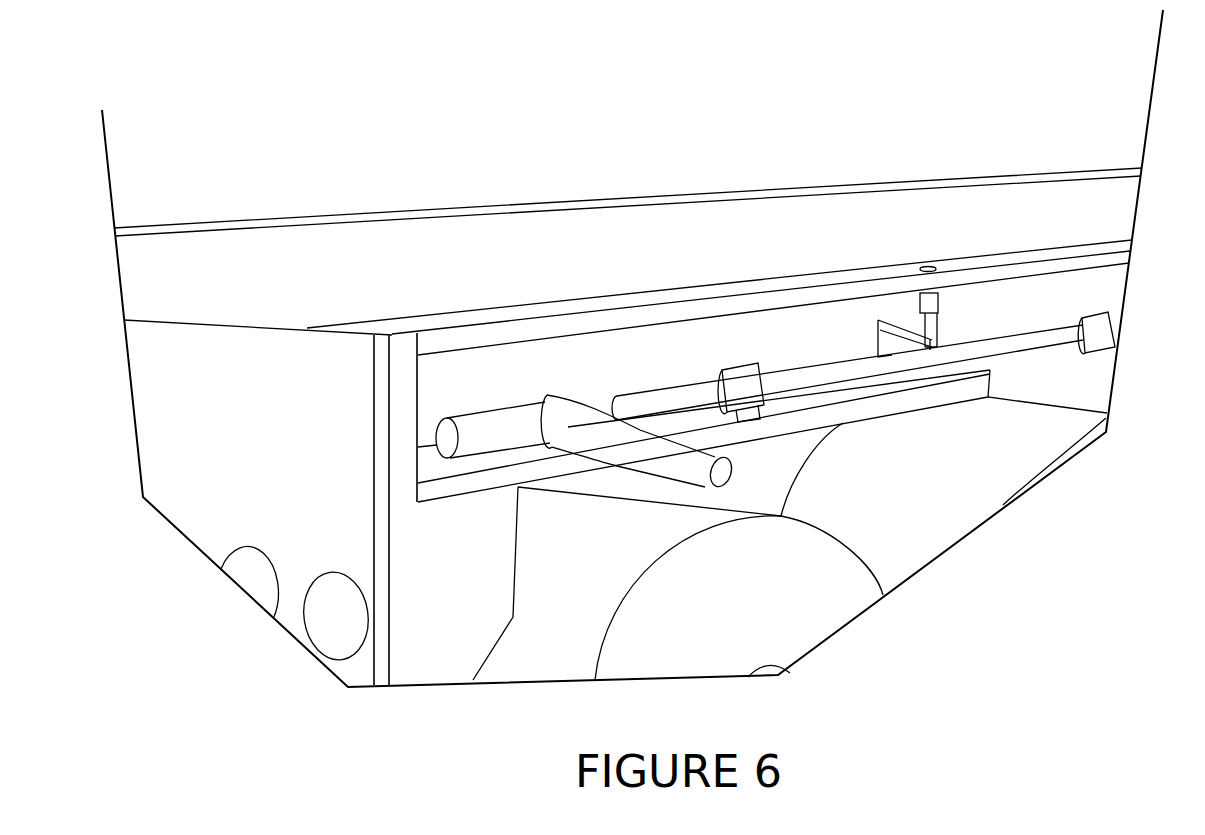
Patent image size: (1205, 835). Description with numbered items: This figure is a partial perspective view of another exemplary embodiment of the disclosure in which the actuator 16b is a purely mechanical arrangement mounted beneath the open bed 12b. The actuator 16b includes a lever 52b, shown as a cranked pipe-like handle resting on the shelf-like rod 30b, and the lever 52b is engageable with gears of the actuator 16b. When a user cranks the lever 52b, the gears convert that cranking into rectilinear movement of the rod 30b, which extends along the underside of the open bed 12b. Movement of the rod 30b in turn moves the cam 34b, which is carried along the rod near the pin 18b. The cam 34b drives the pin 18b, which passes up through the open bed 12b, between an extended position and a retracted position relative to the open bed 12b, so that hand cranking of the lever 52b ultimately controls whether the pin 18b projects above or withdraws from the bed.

The actuator 16b is at (400, 152).
The open bed 12b is at (665, 297).
The pin 18b is at (923, 265).
The rod 30b is at (838, 382).
The cam 34b is at (1030, 352).
The lever 52b is at (678, 468).